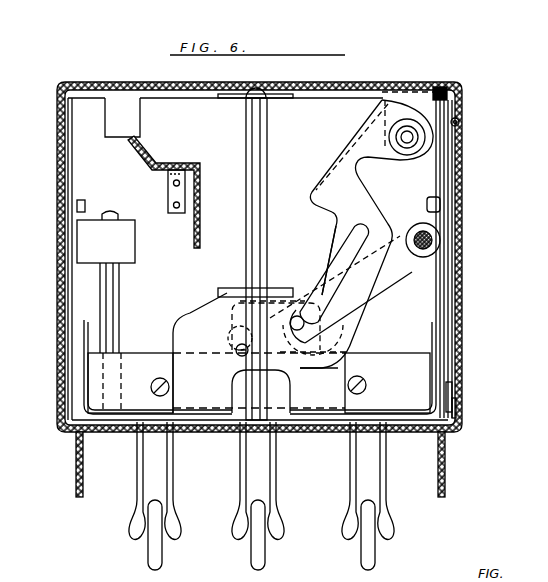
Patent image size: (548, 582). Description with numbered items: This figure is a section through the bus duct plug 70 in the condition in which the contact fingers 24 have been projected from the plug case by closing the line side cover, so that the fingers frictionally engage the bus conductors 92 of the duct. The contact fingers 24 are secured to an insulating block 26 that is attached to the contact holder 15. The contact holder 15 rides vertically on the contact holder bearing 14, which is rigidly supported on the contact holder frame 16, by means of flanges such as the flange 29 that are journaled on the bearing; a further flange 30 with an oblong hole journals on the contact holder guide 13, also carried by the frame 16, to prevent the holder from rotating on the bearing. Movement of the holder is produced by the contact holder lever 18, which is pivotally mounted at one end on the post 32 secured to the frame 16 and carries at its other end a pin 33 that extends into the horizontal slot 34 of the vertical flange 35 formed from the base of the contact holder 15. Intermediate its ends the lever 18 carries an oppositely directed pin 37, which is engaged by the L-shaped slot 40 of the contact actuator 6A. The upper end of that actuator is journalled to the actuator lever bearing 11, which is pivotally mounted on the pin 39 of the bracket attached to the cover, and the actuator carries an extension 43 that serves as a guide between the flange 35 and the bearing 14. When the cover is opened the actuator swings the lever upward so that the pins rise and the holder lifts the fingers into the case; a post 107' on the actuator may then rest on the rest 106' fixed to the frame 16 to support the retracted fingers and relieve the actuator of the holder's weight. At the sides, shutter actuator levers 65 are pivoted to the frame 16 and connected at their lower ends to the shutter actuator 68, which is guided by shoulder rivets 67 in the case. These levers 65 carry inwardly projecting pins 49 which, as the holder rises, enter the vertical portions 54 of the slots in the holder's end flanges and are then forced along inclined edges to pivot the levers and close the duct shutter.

The bus duct plug 70 is at (471, 81).
The contact holder frame 16 is at (345, 97).
The rest 106' is at (181, 192).
The contact holder bearing 14 is at (268, 138).
The flange 30 is at (135, 240).
The contact holder guide 13 is at (121, 285).
The contact holder 15 is at (172, 333).
The vertical flange 35 is at (188, 326).
The flange 29 is at (228, 289).
The pin 37 is at (300, 298).
The horizontal slot 34 is at (230, 341).
The post 107' is at (223, 359).
The pin 33 is at (292, 368).
The insulating block 26 is at (396, 358).
The actuator lever bearing 11 is at (357, 195).
The L-shaped slot 40 is at (364, 232).
The contact actuator 6A is at (332, 238).
The contact holder lever 18 is at (386, 277).
The post 32 is at (415, 225).
The pins 49 is at (432, 197).
The pin 39 is at (413, 137).
The extension 43 is at (340, 367).
The shutter actuator levers 65 is at (446, 288).
The vertical portions 54 is at (440, 343).
The shutter actuator 68 is at (453, 388).
The shoulder rivets 67 is at (458, 405).
The contact fingers 24 is at (172, 524).
The bus conductors 92 is at (163, 555).